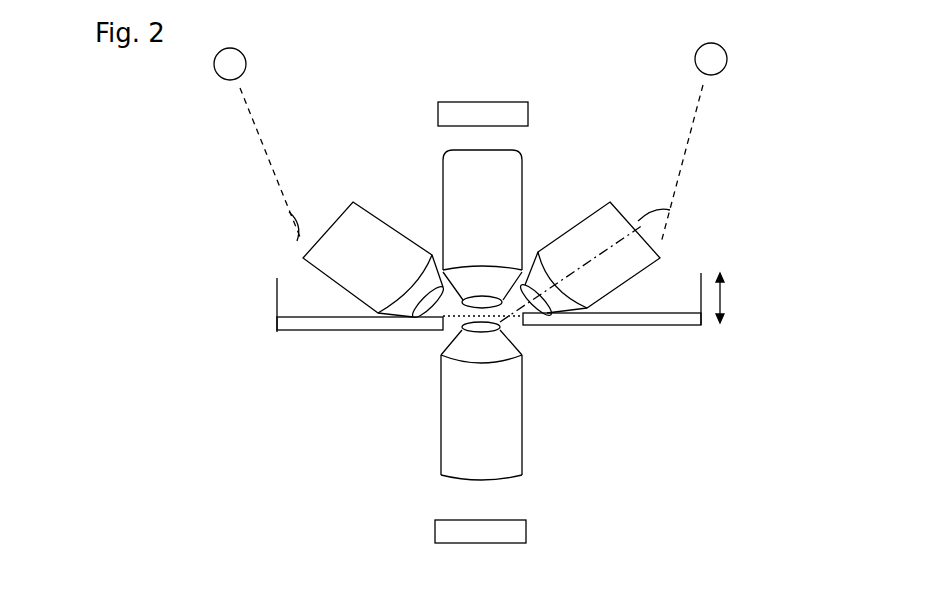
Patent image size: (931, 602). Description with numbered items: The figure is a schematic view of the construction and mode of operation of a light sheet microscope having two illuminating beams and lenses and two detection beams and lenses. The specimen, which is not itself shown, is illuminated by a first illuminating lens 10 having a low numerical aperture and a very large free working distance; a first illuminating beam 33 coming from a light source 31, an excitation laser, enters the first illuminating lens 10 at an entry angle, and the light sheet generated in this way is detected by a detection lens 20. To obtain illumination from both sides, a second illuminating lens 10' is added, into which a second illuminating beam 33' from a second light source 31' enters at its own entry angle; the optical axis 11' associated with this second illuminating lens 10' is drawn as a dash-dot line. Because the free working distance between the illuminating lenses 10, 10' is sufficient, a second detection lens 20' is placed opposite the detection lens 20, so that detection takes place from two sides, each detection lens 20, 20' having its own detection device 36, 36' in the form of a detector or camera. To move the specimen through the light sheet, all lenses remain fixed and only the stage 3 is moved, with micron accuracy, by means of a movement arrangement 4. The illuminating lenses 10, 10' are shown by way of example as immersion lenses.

The stage 3 is at (277, 323).
The movement arrangement 4 is at (725, 297).
The first illuminating lens 10 is at (375, 216).
The second illuminating lens 10' is at (588, 223).
The optical axis of the second illuminating lens 11' is at (571, 248).
The detection lens 20 is at (524, 434).
The second detection lens 20' is at (482, 188).
The light source 31 is at (263, 45).
The second light source 31' is at (747, 42).
The first illuminating beam 33 is at (233, 162).
The second illuminating beam 33' is at (721, 164).
The detection device 36 is at (446, 507).
The second detection device 36' is at (517, 91).